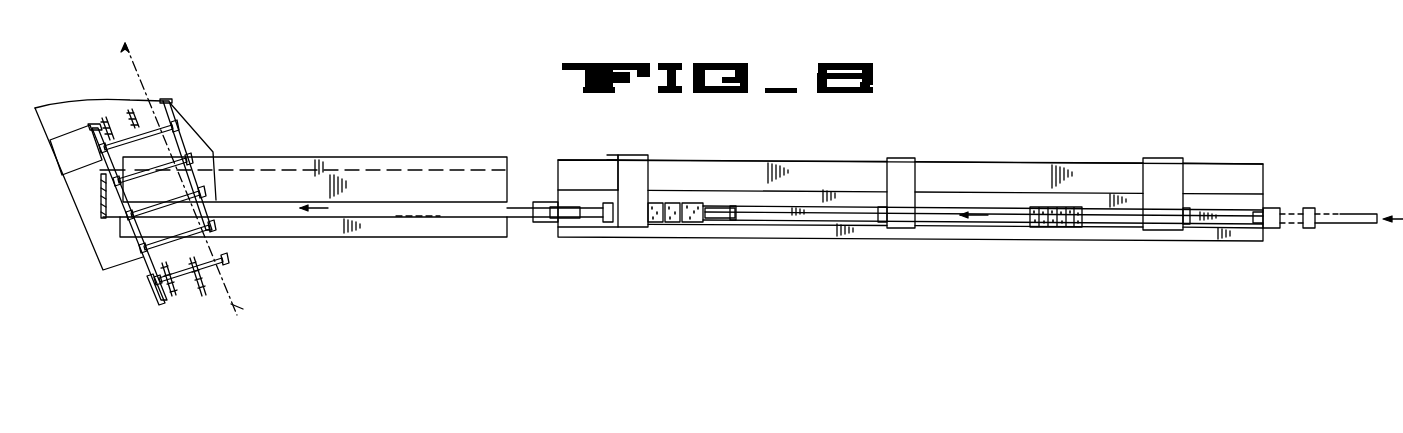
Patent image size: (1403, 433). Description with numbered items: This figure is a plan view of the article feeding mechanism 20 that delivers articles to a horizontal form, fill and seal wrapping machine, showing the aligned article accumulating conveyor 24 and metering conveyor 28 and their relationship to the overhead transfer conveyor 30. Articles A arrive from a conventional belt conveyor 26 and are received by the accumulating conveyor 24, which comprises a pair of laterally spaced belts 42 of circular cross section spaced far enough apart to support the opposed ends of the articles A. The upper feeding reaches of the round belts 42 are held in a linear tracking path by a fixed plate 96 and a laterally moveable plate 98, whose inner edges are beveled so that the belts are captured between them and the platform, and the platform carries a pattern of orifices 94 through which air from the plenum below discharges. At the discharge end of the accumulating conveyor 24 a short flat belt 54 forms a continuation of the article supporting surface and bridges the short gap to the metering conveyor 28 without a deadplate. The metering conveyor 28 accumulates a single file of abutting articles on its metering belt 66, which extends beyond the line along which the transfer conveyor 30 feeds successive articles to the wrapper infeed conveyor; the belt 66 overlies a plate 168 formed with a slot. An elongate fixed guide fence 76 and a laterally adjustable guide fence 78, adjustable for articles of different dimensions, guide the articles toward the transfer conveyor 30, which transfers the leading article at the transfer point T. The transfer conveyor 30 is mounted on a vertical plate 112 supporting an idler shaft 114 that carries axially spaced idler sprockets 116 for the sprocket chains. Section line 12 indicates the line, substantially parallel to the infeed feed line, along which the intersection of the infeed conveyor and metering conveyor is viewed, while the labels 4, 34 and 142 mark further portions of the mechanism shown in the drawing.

The article feeding mechanism 20 is at (958, 112).
The article accumulating conveyor 24 is at (1052, 160).
The belt conveyor 26 is at (1355, 212).
The metering conveyor 28 is at (405, 156).
The transfer conveyor 30 is at (158, 141).
The collar 34 is at (613, 228).
The belts 42 is at (762, 222).
The flat belt 54 is at (522, 207).
The belt 66 is at (103, 217).
The fixed guide fence 76 is at (318, 233).
The laterally adjustable guide fence 78 is at (341, 163).
The orifices 94 is at (930, 213).
The fixed plate 96 is at (800, 238).
The laterally moveable plate 98 is at (795, 193).
The vertical plate 112 is at (150, 276).
The idler shaft 114 is at (210, 264).
The idler sprockets 116 is at (170, 298).
The bolts 142 is at (172, 162).
The plate 168 is at (175, 103).
The view direction arrow 4 is at (402, 213).
The section line 12— 12 is at (143, 78).
The articles A is at (697, 203).
The transfer point T is at (205, 203).